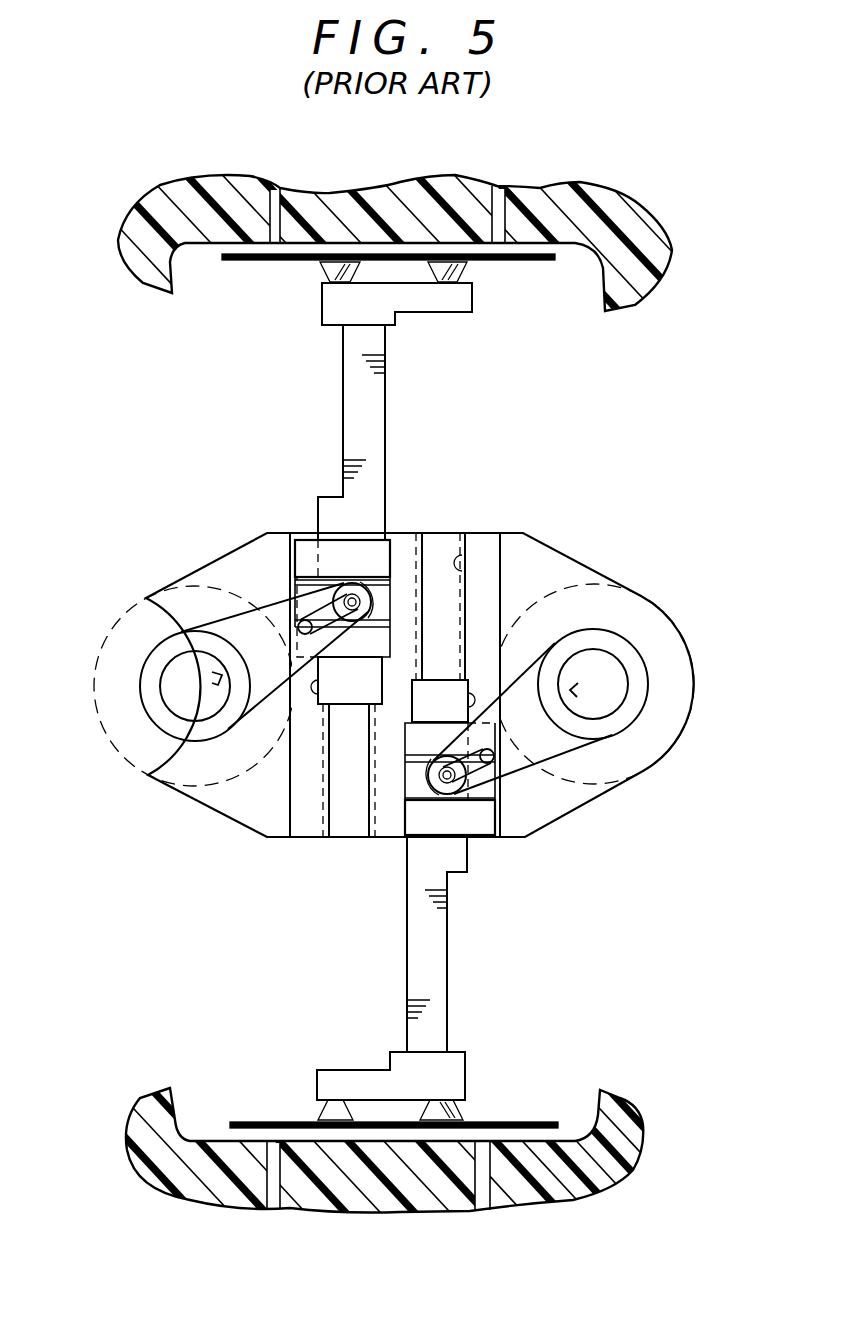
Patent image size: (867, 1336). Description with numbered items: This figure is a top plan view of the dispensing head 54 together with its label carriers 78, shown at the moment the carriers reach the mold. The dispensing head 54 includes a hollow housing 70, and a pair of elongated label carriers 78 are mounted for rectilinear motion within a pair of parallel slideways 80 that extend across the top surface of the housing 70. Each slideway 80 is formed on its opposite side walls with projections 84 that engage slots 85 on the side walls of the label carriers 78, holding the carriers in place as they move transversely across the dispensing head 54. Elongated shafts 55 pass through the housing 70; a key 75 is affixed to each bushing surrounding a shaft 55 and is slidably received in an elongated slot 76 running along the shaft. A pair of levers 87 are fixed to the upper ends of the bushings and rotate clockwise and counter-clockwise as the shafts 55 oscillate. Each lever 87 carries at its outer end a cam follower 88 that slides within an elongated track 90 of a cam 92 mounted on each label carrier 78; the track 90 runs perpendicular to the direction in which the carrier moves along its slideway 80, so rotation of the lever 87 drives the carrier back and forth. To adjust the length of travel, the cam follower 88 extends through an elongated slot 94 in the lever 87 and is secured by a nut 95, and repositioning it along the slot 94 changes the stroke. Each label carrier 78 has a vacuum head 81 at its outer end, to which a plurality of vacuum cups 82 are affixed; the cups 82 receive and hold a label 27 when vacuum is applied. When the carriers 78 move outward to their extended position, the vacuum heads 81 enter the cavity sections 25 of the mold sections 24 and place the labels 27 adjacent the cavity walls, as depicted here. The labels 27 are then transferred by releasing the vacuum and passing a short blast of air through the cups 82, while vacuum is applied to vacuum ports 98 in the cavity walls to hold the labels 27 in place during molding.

The mold sections 24 is at (318, 205).
The vacuum ports 98 is at (503, 200).
The cavity sections 25 is at (582, 263).
The label 27 is at (237, 262).
The vacuum cups 82 is at (470, 270).
The vacuum head 81 is at (322, 292).
The label carriers 78 is at (343, 412).
The dispensing head 54 is at (549, 592).
The housing 70 is at (233, 820).
The shafts 55 is at (172, 672).
The key 75 is at (394, 685).
The slot 76 is at (212, 672).
The levers 87 is at (233, 630).
The cam follower 88 is at (395, 688).
The cam 92 is at (395, 628).
The nut 95 is at (297, 580).
The elongated slot 94 is at (297, 623).
The slots 85 is at (393, 689).
The slideways 80 is at (457, 533).
The projections 84 is at (465, 563).
The track 90 is at (410, 533).